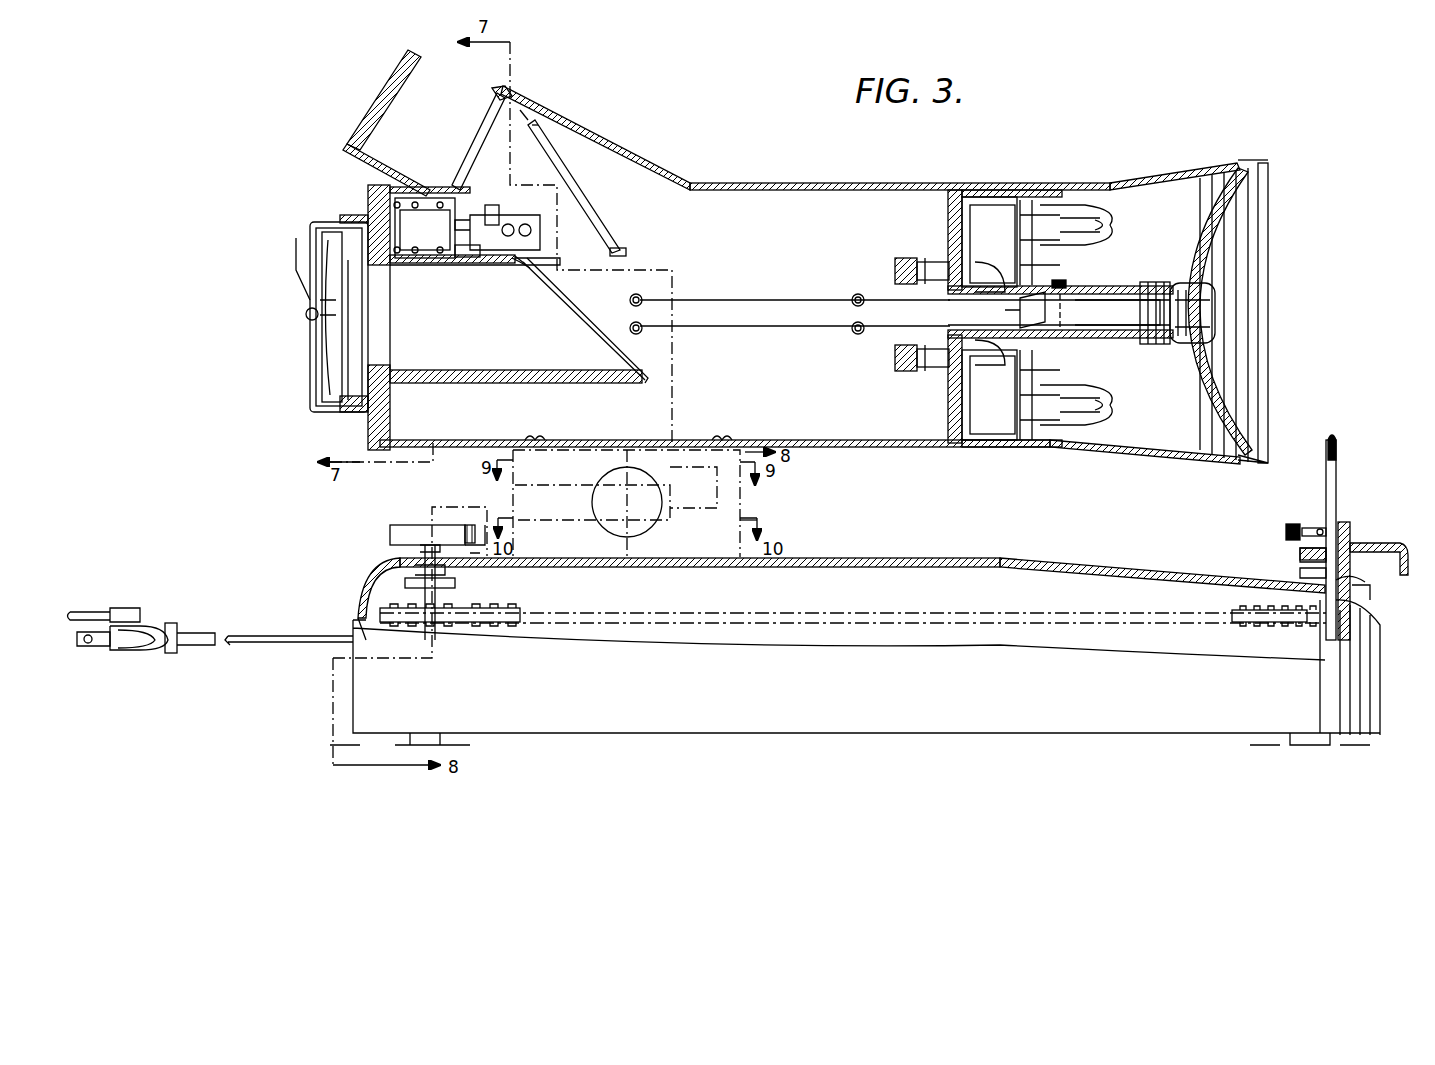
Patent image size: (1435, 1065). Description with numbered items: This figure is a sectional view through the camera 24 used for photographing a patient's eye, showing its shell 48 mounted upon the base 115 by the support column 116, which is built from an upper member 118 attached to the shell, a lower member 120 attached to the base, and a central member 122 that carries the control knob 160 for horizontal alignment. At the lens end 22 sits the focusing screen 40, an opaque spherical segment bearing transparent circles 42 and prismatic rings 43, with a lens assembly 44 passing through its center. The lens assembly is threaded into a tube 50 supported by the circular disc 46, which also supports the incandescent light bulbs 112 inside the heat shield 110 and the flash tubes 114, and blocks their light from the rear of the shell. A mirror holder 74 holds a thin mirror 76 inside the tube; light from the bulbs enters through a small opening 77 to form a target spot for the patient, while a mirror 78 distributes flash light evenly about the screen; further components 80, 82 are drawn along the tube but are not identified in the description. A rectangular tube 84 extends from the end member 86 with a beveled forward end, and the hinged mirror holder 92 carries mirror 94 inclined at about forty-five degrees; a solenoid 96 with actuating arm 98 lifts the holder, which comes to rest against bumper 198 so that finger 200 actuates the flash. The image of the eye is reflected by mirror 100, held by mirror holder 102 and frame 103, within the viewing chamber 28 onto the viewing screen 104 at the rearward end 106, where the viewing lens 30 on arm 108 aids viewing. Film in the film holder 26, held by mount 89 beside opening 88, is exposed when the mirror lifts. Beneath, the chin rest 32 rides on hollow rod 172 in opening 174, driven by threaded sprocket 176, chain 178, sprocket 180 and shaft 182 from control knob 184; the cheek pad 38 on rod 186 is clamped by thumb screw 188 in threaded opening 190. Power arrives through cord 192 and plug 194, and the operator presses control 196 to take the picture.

The lens end 22 is at (1268, 182).
The camera 24 is at (812, 185).
The film holder 26 is at (315, 222).
The viewing chamber 28 is at (590, 128).
The viewing lens 30 is at (395, 95).
The chin rest 32 is at (1375, 542).
The cheek pad 38 is at (1340, 440).
The focusing screen 40 is at (1250, 445).
The transparent circles 42 is at (1200, 240).
The prismatic rings 43 is at (1235, 178).
The lens assembly 44 is at (1195, 320).
The circular disc 46 is at (950, 212).
The shell 48 is at (990, 185).
The tube 50 is at (1080, 292).
The mirror holder 74 is at (1030, 290).
The mirror 76 is at (1018, 314).
The opening 77 is at (1030, 345).
The mirror 78 is at (1110, 285).
The lamp socket coupling 80 is at (1150, 340).
The set screw 82 is at (1065, 278).
The rectangular tube 84 is at (482, 384).
The end member 86 is at (385, 414).
The opening 88 is at (385, 370).
The mount 89 is at (352, 215).
The mirror holder 92 is at (588, 300).
The mirror 94 is at (580, 310).
The solenoid 96 is at (430, 255).
The actuating arm 98 is at (530, 248).
The mirror 100 is at (598, 220).
The mirror holder 102 is at (583, 194).
The frame 103 is at (525, 118).
The viewing screen 104 is at (480, 148).
The rearward end 106 is at (496, 94).
The arm 108 is at (360, 152).
The heat shield 110 is at (1021, 295).
The incandescent light bulbs 112 is at (1000, 275).
The flash tubes 114 is at (1098, 218).
The base 115 is at (900, 557).
The support column 116 is at (748, 518).
The upper member 118 is at (675, 460).
The lower member 120 is at (725, 570).
The central member 122 is at (730, 500).
The control knob 160 is at (645, 522).
The hollow rod 172 is at (1345, 530).
The opening 174 is at (1345, 582).
The threaded sprocket 176 is at (1360, 604).
The chain 178 is at (445, 625).
The sprocket 180 is at (418, 610).
The shaft 182 is at (440, 596).
The control knob 184 is at (412, 525).
The rod 186 is at (1338, 498).
The thumb screw 188 is at (1290, 524).
The threaded opening 190 is at (1320, 525).
The cord 192 is at (258, 634).
The plug 194 is at (142, 622).
The control 196 is at (478, 545).
The bumper 198 is at (626, 252).
The finger 200 is at (532, 260).